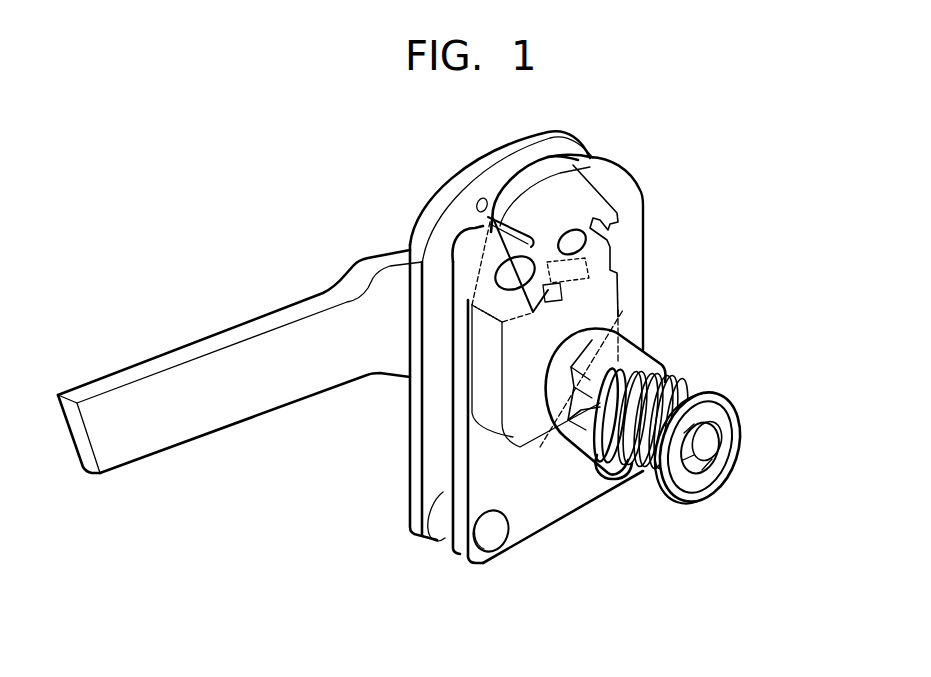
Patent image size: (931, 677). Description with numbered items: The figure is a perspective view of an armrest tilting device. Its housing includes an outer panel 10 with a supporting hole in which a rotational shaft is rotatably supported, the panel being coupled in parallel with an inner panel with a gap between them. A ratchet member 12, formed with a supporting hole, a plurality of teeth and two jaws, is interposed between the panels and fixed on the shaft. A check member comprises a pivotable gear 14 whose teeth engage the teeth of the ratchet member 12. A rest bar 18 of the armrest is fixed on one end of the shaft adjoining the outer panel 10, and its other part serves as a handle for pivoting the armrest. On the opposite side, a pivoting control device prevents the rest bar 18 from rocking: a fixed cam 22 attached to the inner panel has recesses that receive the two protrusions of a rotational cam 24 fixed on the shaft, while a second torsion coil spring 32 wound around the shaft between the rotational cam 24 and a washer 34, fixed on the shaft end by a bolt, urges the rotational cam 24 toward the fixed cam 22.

The outer panel 10 is at (637, 243).
The ratchet member 12 is at (528, 423).
The pivotable gear 14 is at (593, 192).
The rest bar 18 is at (332, 380).
The fixed cam 22 is at (612, 340).
The rotational cam 24 is at (662, 364).
The second torsion coil spring 32 is at (684, 394).
The washer 34 is at (739, 425).